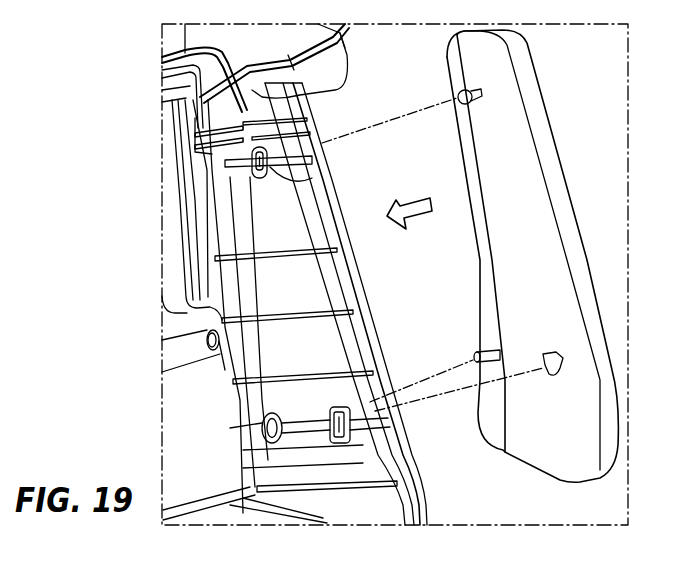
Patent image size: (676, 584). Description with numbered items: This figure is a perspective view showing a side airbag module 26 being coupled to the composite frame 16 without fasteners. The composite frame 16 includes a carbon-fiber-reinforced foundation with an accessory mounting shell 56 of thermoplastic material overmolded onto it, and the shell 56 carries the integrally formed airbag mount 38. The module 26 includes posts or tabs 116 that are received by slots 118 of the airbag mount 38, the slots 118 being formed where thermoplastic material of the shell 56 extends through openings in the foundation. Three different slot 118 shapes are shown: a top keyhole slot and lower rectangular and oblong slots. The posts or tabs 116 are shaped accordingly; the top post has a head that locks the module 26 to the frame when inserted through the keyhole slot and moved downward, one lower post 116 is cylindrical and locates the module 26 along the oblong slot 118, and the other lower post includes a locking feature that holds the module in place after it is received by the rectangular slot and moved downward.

The composite frame 16 is at (307, 122).
The side airbag module 26 is at (542, 113).
The airbag mount 38 is at (343, 393).
The accessory mounting shell 56 is at (285, 168).
The posts or tabs 116 is at (475, 100).
The slots 118 is at (257, 178).